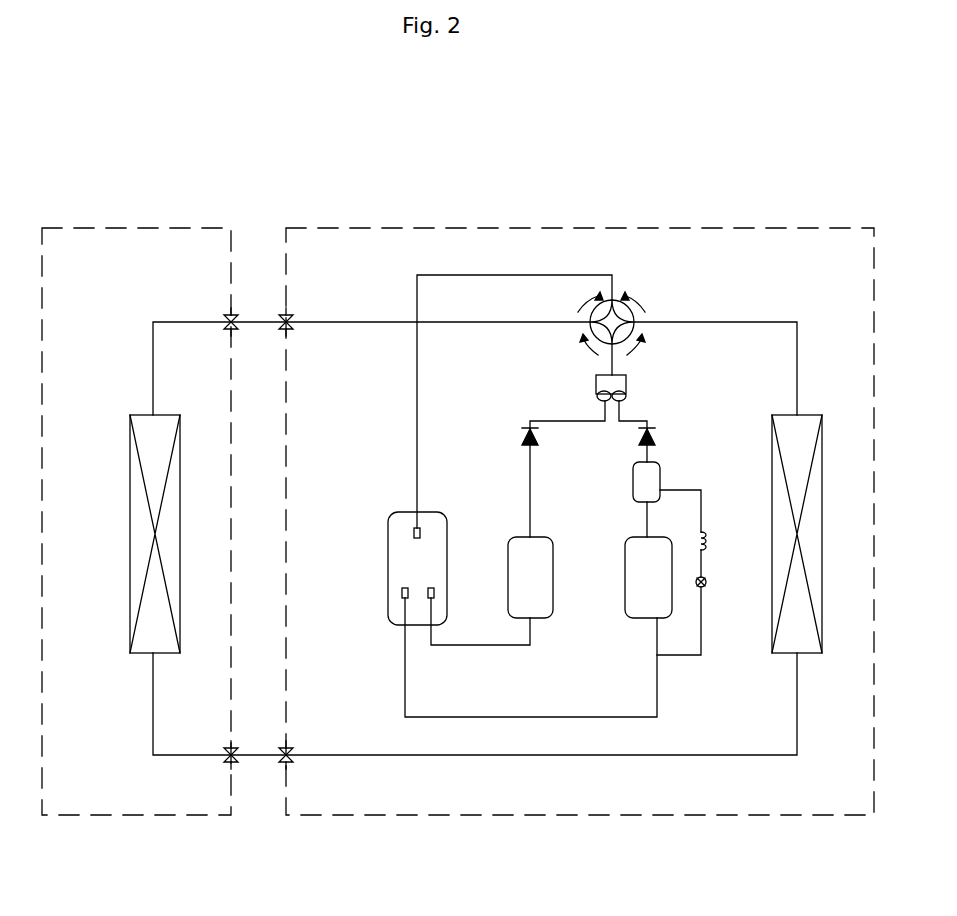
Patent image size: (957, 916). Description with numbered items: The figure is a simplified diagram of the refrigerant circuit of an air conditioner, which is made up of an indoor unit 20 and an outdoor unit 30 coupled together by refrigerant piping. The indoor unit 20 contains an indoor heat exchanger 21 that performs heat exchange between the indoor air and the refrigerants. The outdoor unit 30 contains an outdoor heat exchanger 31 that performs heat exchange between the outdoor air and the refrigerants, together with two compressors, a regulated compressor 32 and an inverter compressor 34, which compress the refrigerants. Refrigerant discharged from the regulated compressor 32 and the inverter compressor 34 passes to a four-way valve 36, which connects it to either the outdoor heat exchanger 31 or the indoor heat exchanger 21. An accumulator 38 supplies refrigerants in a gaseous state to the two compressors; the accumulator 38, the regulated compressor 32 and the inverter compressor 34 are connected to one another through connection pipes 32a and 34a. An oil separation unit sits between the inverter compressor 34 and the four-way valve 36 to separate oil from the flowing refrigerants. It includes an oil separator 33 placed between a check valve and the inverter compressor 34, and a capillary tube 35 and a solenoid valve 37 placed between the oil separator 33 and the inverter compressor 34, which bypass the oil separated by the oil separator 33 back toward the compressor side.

The indoor unit 20 is at (133, 212).
The outdoor unit 30 is at (655, 218).
The indoor heat exchanger 21 is at (130, 511).
The outdoor heat exchanger 31 is at (806, 413).
The regulated compressor 32 is at (509, 541).
The connection pipe 32a is at (478, 645).
The oil separator 33 is at (660, 465).
The inverter compressor 34 is at (660, 540).
The connection pipe 34a is at (608, 717).
The capillary tube 35 is at (705, 535).
The 4-way valve 36 is at (618, 300).
The solenoid valve 37 is at (705, 580).
The accumulator 38 is at (400, 512).